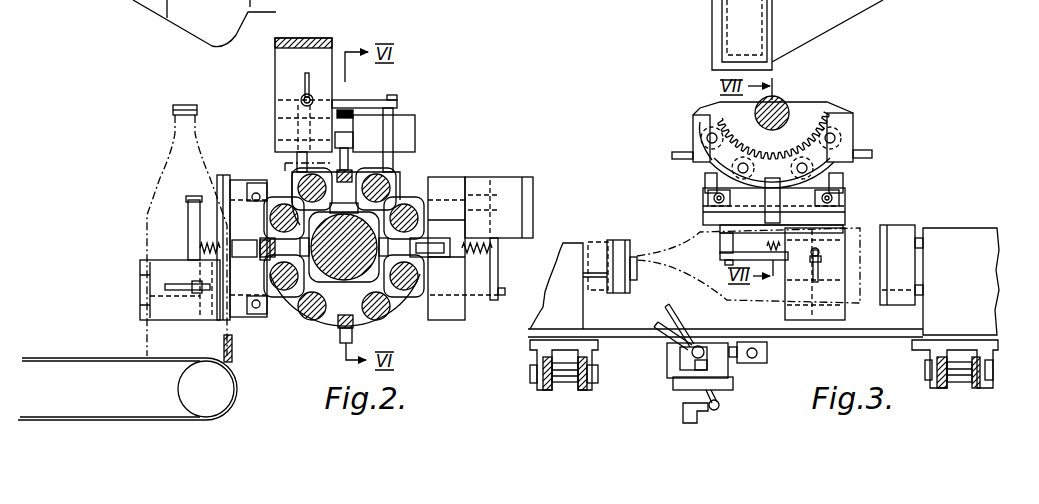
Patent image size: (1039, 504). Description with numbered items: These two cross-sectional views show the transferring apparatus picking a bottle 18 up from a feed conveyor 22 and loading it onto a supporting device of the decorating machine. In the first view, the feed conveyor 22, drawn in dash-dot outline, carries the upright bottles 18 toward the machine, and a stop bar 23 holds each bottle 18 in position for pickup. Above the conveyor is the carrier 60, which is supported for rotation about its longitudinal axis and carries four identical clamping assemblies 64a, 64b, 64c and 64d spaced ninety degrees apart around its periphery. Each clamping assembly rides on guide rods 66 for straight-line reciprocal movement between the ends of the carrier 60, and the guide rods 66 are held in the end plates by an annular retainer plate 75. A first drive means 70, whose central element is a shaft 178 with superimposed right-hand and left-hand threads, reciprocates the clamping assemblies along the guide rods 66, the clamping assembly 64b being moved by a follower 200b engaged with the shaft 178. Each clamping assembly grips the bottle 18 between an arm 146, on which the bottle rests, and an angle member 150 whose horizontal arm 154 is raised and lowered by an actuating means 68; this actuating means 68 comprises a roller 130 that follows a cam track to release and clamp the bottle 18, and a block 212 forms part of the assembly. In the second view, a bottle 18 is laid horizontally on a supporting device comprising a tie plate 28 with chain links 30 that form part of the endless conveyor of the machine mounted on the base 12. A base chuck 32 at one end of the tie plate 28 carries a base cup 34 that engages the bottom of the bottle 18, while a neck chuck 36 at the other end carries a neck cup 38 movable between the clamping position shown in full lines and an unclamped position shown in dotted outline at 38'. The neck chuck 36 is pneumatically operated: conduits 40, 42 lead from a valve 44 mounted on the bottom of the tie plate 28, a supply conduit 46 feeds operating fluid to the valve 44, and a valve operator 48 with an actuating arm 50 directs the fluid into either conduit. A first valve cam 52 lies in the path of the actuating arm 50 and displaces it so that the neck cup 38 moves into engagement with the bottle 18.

In FIG. 3, the base 12 is at (697, 17).
In FIG. 2, the bottle 18 is at (165, 165).
In FIG. 3, the bottle 18 is at (862, 226).
In FIG. 2, the feed conveyor 22 is at (60, 357).
In FIG. 2, the stop bar 23 is at (234, 340).
In FIG. 3, the tie plate 28 is at (844, 341).
In FIG. 3, the chain links 30 is at (533, 385).
In FIG. 3, the base chuck 32 is at (978, 226).
In FIG. 3, the base cup 34 is at (905, 226).
In FIG. 3, the neck chuck 36 is at (572, 240).
In FIG. 3, the neck cup 38 is at (626, 247).
In FIG. 3, the unclamped position of neck cup 38' is at (614, 240).
In FIG. 3, the conduit 40 is at (660, 338).
In FIG. 3, the conduit 42 is at (681, 322).
In FIG. 3, the valve 44 is at (685, 366).
In FIG. 3, the supply conduit 46 is at (758, 354).
In FIG. 3, the valve operator 48 is at (734, 384).
In FIG. 3, the actuating arm 50 is at (720, 405).
In FIG. 3, the first valve cam 52 is at (708, 412).
In FIG. 2, the carrier 60 is at (374, 252).
In FIG. 3, the carrier 60 is at (773, 136).
In FIG. 2, the clamping assembly 64a is at (190, 222).
In FIG. 3, the clamping assembly 64a is at (690, 142).
In FIG. 2, the clamping assembly 64b is at (360, 82).
In FIG. 2, the clamping assembly 64c is at (484, 172).
In FIG. 3, the clamping assembly 64c is at (858, 133).
In FIG. 3, the clamping assembly 64d is at (850, 186).
In FIG. 2, the guide rods 66 is at (301, 312).
In FIG. 3, the guide rods 66 is at (712, 126).
In FIG. 2, the actuating means 68 is at (336, 330).
In FIG. 2, the first drive means 70 is at (398, 186).
In FIG. 3, the annular retainer plate 75 is at (700, 121).
In FIG. 2, the roller 130 is at (232, 238).
In FIG. 2, the second bar member or arm 146 is at (216, 183).
In FIG. 2, the angle member 150 is at (339, 38).
In FIG. 3, the angle member 150 is at (849, 312).
In FIG. 2, the horizontal arm 154 is at (140, 266).
In FIG. 2, the shaft 178 is at (344, 257).
In FIG. 2, the follower 200b is at (293, 176).
In FIG. 2, the piston block 212 is at (240, 262).